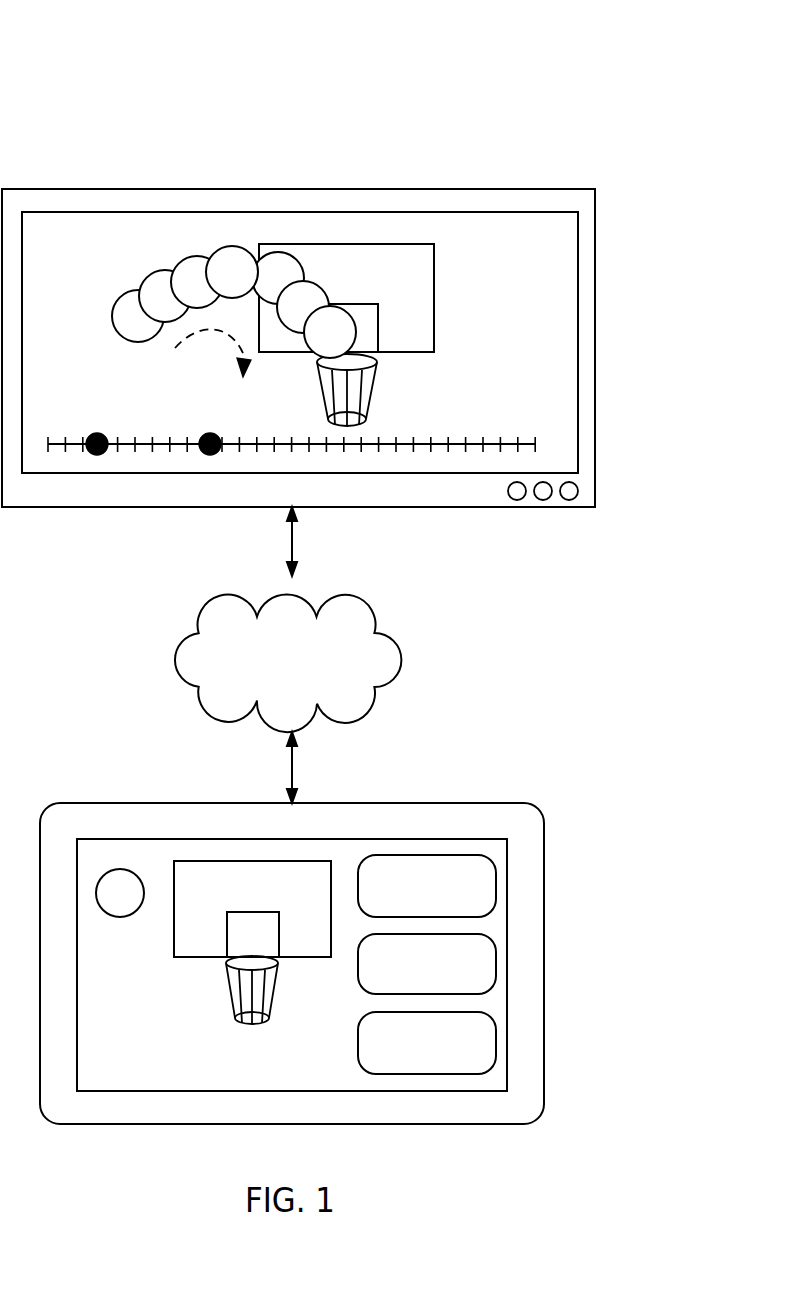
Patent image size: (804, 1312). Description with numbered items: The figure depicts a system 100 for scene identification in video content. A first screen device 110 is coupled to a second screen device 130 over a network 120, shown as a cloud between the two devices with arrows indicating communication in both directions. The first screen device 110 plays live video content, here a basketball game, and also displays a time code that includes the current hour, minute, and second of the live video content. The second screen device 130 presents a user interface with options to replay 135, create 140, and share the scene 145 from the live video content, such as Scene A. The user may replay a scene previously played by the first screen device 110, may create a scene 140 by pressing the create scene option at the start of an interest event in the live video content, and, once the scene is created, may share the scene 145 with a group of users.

The system 100 is at (89, 79).
The first screen device 110 is at (595, 240).
The network 120 is at (267, 688).
The second screen device 130 is at (543, 823).
The replay option 135 is at (483, 910).
The create scene option 140 is at (483, 988).
The share scene option 145 is at (483, 1068).